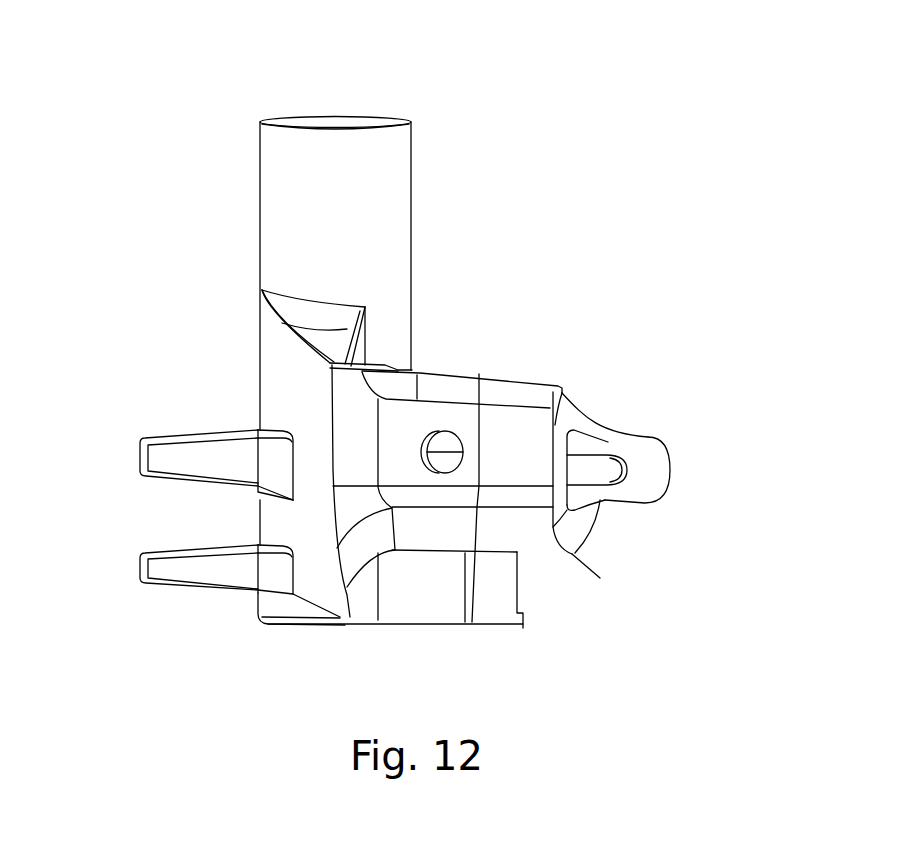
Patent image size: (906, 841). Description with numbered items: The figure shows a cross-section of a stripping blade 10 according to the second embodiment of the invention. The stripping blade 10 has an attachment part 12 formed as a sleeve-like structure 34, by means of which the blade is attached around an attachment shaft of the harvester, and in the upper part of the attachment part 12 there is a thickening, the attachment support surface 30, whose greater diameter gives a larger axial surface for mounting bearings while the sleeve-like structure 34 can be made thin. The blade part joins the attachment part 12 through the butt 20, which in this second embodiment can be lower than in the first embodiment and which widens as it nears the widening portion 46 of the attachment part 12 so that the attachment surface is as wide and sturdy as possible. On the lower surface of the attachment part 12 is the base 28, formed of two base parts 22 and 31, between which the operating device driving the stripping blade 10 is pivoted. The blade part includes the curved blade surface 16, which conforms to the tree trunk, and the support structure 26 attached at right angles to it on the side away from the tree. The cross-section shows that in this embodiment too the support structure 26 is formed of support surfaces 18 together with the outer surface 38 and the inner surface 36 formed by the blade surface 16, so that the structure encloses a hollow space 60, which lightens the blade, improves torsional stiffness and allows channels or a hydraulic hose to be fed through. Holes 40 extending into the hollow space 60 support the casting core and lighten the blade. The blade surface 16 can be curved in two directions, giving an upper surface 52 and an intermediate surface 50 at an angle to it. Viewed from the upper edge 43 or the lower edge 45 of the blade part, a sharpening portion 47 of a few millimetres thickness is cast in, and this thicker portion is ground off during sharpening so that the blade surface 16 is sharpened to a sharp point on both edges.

The stripping blade 10 is at (408, 363).
The attachment part 12 is at (408, 376).
The blade surface 16 is at (527, 453).
The support surfaces 18 is at (596, 437).
The butt 20 is at (287, 378).
The base part 22 is at (148, 567).
The support structure 26 is at (699, 475).
The base 28 is at (158, 476).
The attachment support surface 30 is at (291, 235).
The base part 31 is at (172, 455).
The sleeve-like structure 34 is at (280, 170).
The inner surface 36 is at (571, 432).
The outer surface 38 is at (655, 470).
The holes 40 is at (445, 431).
The upper edge 43 is at (569, 370).
The lower edge 45 is at (516, 641).
The widening portion 46 is at (328, 342).
The sharpening portion 47 is at (555, 385).
The intermediate surface 50 is at (505, 502).
The upper surface 52 is at (530, 480).
The hollow space 60 is at (582, 466).